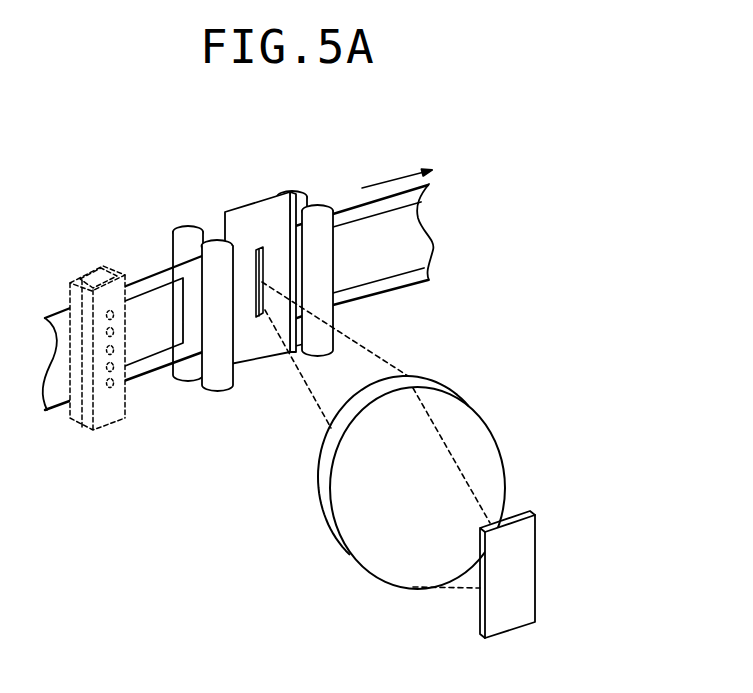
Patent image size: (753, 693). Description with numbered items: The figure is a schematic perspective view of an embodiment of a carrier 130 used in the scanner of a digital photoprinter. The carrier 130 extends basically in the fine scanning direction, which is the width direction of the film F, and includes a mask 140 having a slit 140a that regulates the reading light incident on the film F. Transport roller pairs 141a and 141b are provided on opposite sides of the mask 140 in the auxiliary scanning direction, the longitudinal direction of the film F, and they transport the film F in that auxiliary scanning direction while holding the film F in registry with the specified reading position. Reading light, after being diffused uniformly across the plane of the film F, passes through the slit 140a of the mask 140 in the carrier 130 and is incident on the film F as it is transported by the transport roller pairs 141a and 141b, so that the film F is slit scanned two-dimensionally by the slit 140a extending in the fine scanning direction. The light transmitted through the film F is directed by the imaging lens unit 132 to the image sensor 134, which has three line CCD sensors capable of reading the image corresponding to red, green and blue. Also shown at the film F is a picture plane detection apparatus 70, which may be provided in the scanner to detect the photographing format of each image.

The carrier 130 is at (195, 193).
The film F is at (158, 294).
The mask 140 is at (257, 347).
The slit 140a is at (258, 247).
The transport roller pair 141a is at (213, 370).
The transport roller pair 141b is at (317, 283).
The imaging lens unit 132 is at (460, 422).
The image sensor 134 is at (520, 567).
The picture plane detection apparatus 70 is at (110, 428).